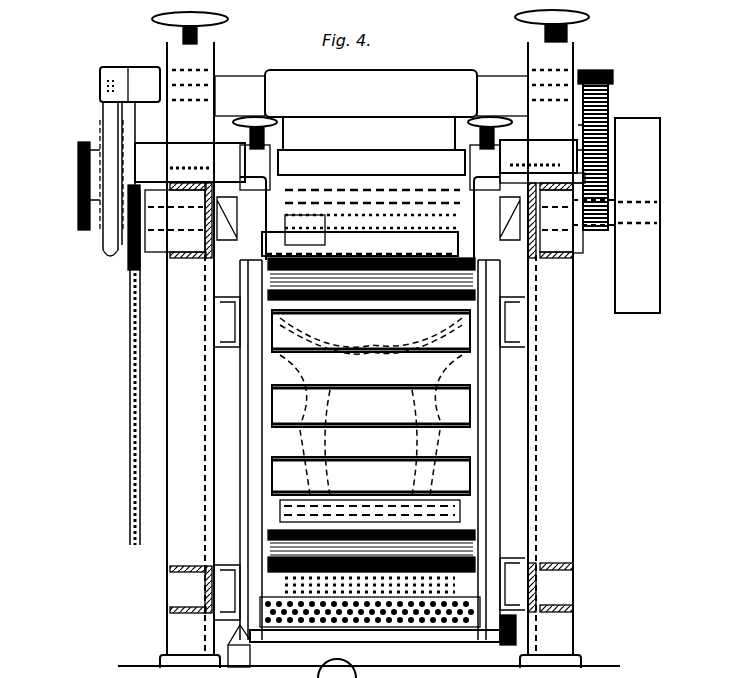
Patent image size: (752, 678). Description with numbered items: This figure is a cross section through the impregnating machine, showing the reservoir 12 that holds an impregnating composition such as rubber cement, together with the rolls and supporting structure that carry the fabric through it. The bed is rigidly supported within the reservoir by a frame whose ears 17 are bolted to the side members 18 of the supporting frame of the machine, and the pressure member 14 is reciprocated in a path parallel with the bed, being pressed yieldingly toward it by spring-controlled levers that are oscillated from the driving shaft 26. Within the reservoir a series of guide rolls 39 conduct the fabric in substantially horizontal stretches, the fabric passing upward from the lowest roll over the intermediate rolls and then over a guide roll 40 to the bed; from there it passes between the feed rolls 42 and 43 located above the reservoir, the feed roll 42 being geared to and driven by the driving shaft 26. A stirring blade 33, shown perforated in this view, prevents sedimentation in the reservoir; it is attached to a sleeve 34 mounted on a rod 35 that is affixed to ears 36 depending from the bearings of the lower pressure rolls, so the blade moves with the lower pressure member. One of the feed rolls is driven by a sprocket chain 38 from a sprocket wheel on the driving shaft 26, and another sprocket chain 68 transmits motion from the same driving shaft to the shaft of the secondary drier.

The reservoir 12 is at (240, 444).
The pressure member 14 is at (372, 305).
The ears 17 is at (215, 180).
The side members 18 is at (192, 262).
The driving shaft 26 is at (78, 222).
The stirring blade 33 is at (455, 630).
The sleeve 34 is at (282, 630).
The rod 35 is at (232, 635).
The ears 36 is at (191, 589).
The sprocket chain 38 is at (78, 180).
The guide rolls 39 is at (420, 392).
The guide roll 40 is at (333, 244).
The feed roll 42 is at (400, 130).
The feed roll 43 is at (405, 78).
The sprocket chain 68 is at (130, 405).